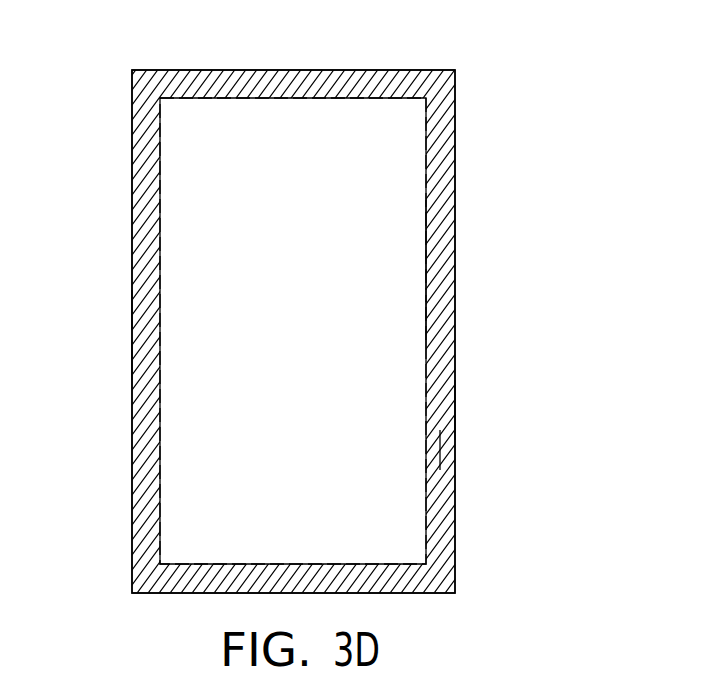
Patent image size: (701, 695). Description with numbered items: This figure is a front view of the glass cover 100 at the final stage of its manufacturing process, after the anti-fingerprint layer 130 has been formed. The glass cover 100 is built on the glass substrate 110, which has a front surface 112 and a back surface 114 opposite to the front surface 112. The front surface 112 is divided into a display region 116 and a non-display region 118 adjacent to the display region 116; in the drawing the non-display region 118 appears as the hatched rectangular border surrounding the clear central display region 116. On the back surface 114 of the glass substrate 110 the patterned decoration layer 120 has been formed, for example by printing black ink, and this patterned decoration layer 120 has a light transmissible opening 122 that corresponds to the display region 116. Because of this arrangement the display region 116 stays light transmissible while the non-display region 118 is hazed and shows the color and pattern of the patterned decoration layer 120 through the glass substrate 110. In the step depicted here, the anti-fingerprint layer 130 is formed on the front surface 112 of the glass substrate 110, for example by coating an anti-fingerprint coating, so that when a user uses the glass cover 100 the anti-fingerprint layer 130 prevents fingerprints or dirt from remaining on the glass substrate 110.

The glass cover 100 is at (75, 52).
The glass substrate 110 is at (478, 74).
The front surface 112 is at (403, 242).
The back surface 114 is at (407, 322).
The display region 116 is at (134, 310).
The non-display region 118 is at (134, 357).
The patterned decoration layer 120 is at (455, 412).
The light transmissible opening 122 is at (405, 448).
The anti-fingerprint layer 130 is at (412, 353).